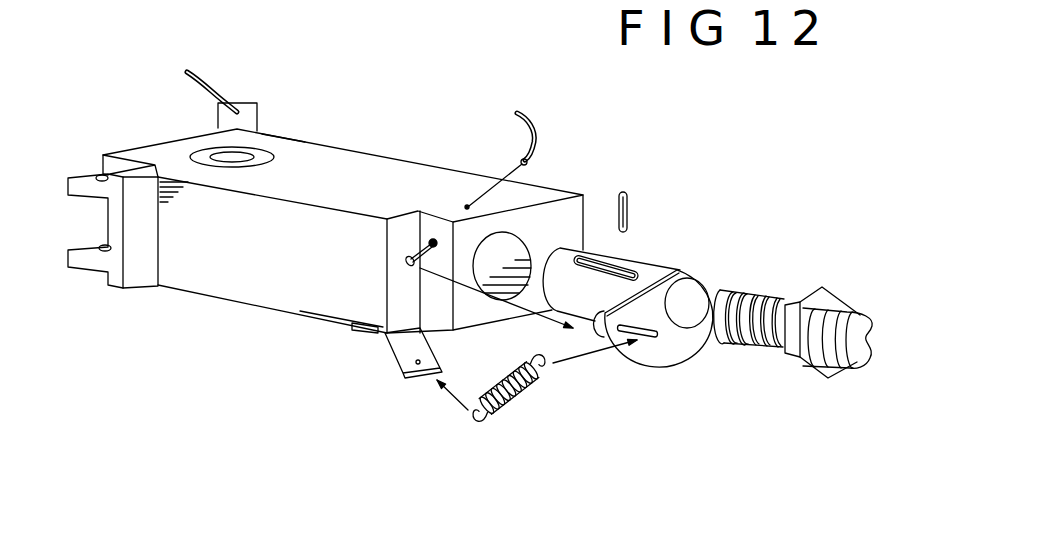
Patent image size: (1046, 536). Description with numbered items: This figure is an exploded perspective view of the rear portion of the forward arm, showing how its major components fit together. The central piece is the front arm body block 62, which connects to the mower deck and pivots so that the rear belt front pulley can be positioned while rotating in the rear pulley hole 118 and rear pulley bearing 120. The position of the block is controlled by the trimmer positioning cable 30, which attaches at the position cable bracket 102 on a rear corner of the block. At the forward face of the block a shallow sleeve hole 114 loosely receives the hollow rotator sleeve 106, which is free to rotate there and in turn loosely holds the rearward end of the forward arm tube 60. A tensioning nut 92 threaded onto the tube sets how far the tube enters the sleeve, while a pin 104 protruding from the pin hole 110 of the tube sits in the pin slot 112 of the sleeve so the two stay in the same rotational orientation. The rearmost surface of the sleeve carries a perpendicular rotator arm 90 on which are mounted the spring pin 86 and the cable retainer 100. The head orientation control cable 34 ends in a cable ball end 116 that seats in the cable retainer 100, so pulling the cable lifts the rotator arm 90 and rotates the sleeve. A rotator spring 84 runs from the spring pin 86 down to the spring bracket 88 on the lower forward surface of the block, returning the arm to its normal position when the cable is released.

The trimmer positioning cable 30 is at (197, 78).
The position cable bracket 102 is at (260, 100).
The front arm body block 62 is at (442, 188).
The head orientation control cable 34 is at (540, 133).
The sleeve hole 114 is at (517, 247).
The pin 104 is at (632, 192).
The pin slot 112 is at (640, 255).
The rotator sleeve 106 is at (668, 258).
The pin hole 110 is at (765, 293).
The forward arm tube 60 is at (788, 293).
The rear pulley hole 118 is at (230, 158).
The rear pulley bearing 120 is at (213, 172).
The cable ball end 116 is at (408, 263).
The spring bracket 88 is at (415, 380).
The rotator spring 84 is at (508, 417).
The cable retainer 100 is at (593, 335).
The rotator arm 90 is at (640, 367).
The spring pin 86 is at (658, 345).
The tensioning nut 92 is at (807, 378).